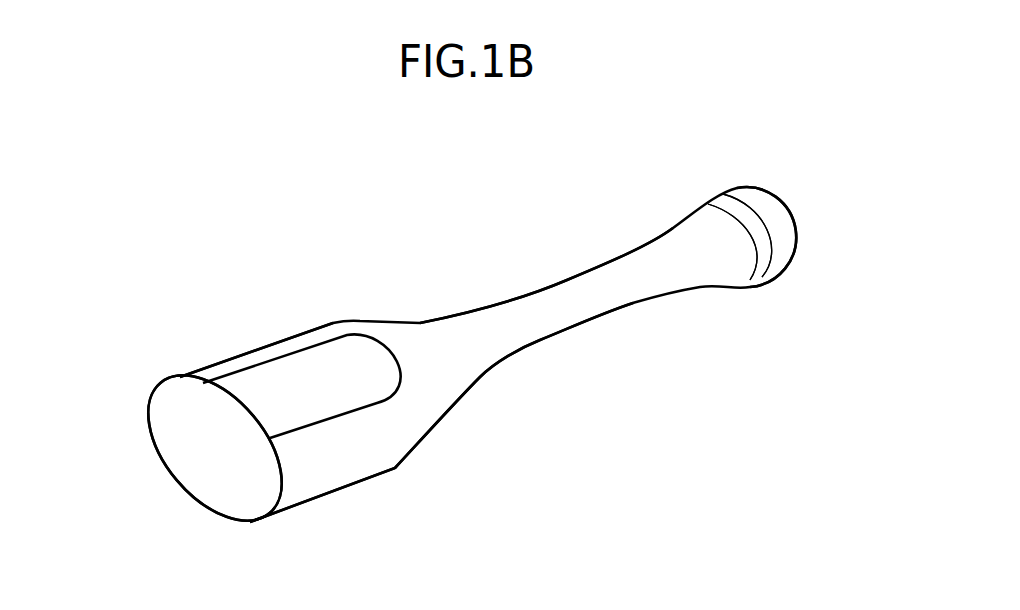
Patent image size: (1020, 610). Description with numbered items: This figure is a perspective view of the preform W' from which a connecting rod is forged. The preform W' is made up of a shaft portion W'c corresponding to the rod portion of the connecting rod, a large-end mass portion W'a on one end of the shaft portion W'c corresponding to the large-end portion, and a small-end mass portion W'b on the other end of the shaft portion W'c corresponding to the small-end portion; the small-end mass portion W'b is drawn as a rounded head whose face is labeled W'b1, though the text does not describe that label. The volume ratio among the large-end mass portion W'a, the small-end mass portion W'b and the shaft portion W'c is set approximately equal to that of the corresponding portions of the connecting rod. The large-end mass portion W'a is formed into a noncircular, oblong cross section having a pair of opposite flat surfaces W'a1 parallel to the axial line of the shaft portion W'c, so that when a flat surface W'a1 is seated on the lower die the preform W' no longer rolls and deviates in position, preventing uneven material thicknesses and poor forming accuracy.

The preform W' is at (488, 354).
The large-end mass portion W'a is at (278, 439).
The flat surface W'a1 is at (192, 448).
The small-end mass portion W'b is at (799, 237).
The end face of head portion W'b1 is at (744, 282).
The shaft portion W'c is at (546, 348).